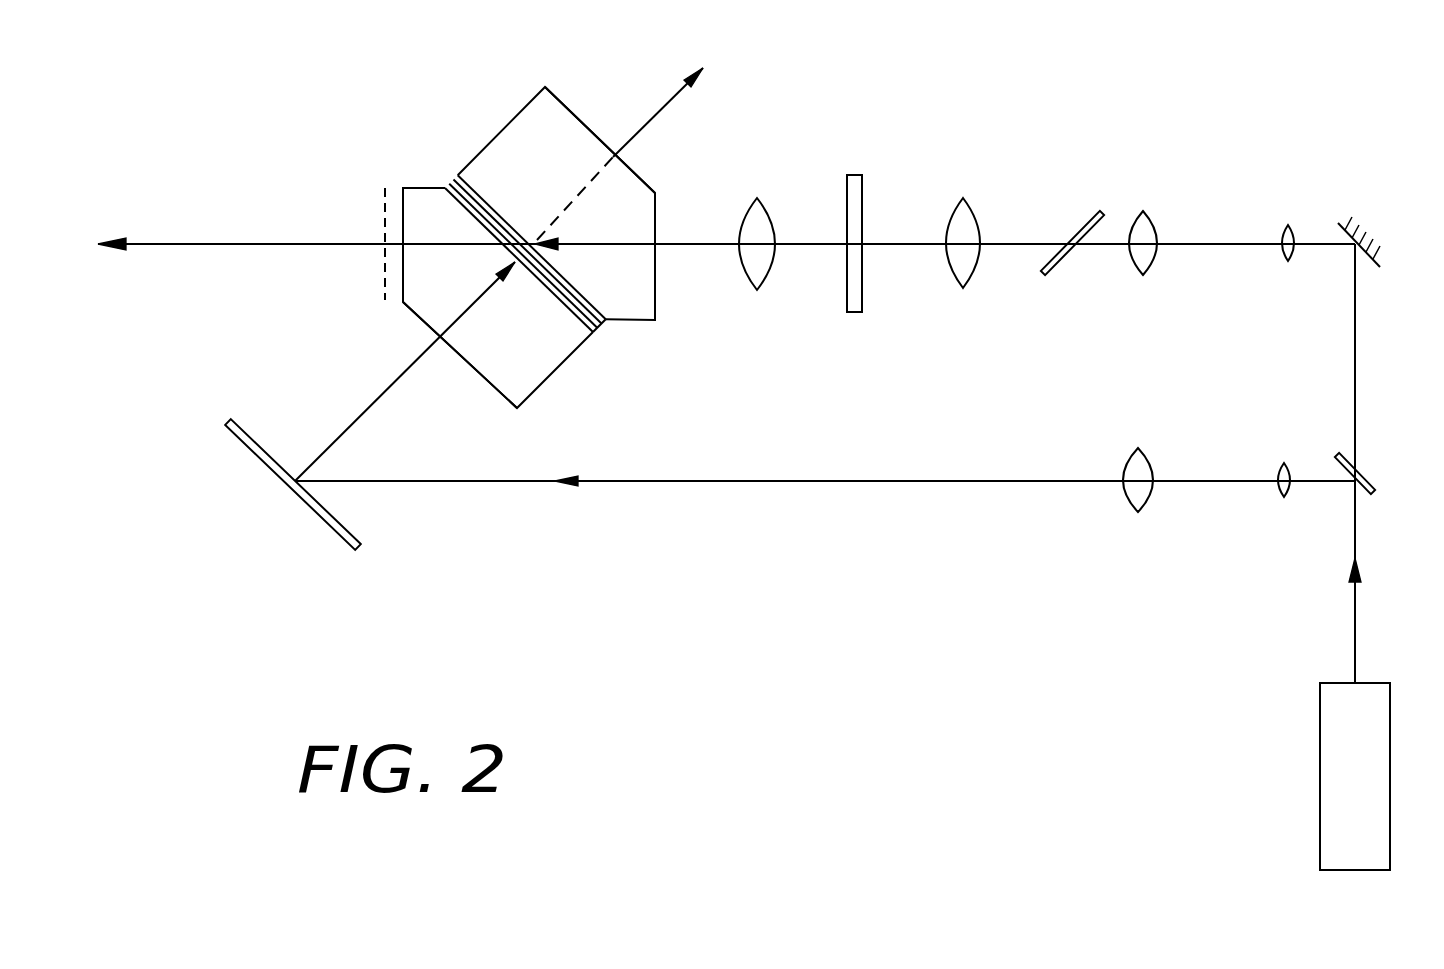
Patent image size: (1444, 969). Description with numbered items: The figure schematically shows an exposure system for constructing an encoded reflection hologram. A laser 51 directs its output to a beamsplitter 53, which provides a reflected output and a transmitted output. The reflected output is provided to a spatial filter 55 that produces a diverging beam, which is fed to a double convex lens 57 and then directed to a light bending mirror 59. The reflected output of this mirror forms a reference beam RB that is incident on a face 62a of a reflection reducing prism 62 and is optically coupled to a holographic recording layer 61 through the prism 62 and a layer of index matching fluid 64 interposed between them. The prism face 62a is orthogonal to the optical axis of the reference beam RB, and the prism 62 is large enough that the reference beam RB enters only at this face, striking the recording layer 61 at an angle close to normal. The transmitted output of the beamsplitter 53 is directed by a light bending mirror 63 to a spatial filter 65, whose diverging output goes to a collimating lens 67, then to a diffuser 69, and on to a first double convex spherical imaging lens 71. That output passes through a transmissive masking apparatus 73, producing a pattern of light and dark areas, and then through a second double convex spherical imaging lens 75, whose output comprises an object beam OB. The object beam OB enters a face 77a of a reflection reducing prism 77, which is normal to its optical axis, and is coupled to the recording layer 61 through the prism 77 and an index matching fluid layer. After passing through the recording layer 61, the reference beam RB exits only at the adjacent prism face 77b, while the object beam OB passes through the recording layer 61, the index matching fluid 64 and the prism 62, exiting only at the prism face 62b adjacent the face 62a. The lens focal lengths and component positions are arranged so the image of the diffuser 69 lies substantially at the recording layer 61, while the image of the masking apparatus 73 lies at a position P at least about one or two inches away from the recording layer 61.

The laser 51 is at (1310, 776).
The beamsplitter 53 is at (1383, 500).
The spatial filter 55 is at (1276, 510).
The double convex lens 57 is at (1172, 497).
The light bending mirror 59 is at (293, 500).
The holographic recording layer 61 is at (495, 223).
The reflection reducing prism 62 is at (514, 302).
The prism face 62a is at (476, 384).
The prism face 62b is at (390, 223).
The light bending mirror 63 is at (1391, 264).
The index matching fluid 64 is at (630, 350).
The spatial filter 65 is at (1312, 210).
The collimating lens 67 is at (1164, 215).
The diffuser 69 is at (1081, 264).
The first double convex spherical imaging lens 71 is at (994, 262).
The transmissive masking apparatus 73 is at (895, 221).
The second double convex spherical imaging lens 75 is at (779, 217).
The reflection reducing prism 77 is at (556, 190).
The prism face 77a is at (705, 232).
The prism face 77b is at (600, 110).
The object beam OB is at (726, 275).
The reference beam RB is at (405, 371).
The position P is at (349, 255).